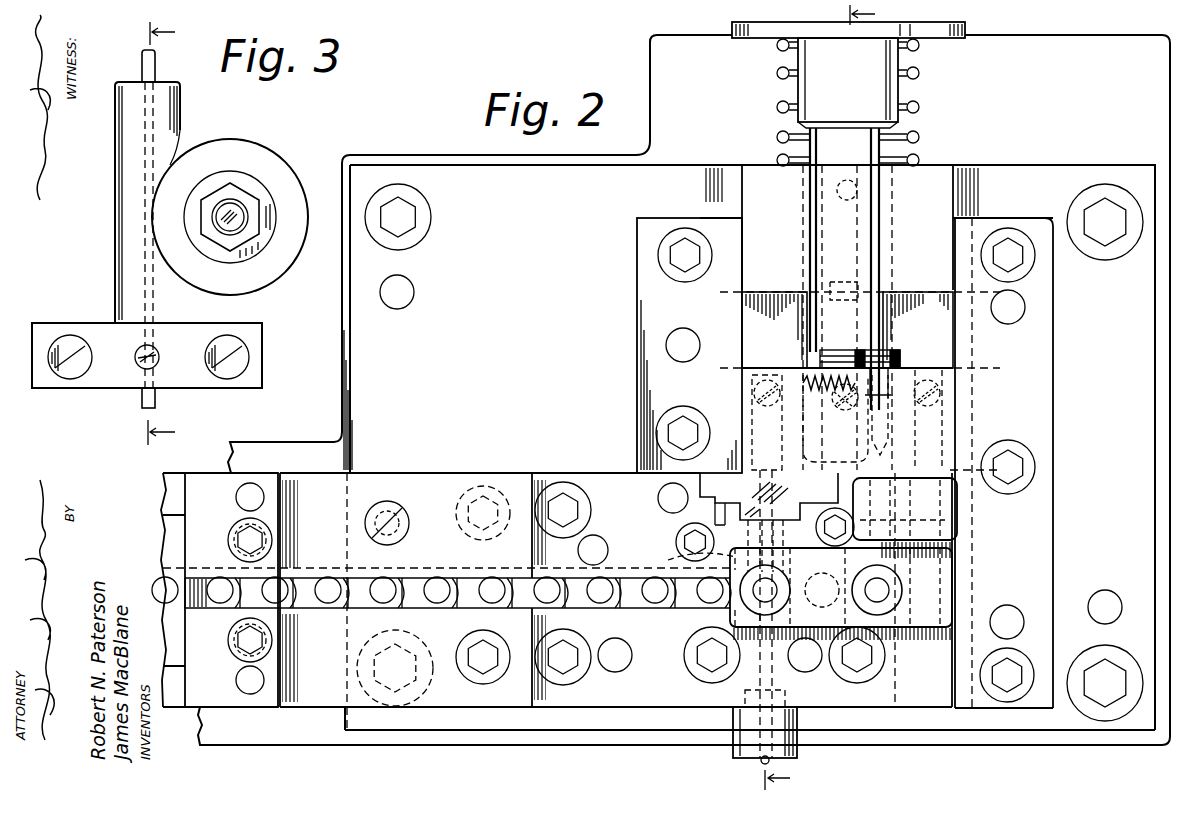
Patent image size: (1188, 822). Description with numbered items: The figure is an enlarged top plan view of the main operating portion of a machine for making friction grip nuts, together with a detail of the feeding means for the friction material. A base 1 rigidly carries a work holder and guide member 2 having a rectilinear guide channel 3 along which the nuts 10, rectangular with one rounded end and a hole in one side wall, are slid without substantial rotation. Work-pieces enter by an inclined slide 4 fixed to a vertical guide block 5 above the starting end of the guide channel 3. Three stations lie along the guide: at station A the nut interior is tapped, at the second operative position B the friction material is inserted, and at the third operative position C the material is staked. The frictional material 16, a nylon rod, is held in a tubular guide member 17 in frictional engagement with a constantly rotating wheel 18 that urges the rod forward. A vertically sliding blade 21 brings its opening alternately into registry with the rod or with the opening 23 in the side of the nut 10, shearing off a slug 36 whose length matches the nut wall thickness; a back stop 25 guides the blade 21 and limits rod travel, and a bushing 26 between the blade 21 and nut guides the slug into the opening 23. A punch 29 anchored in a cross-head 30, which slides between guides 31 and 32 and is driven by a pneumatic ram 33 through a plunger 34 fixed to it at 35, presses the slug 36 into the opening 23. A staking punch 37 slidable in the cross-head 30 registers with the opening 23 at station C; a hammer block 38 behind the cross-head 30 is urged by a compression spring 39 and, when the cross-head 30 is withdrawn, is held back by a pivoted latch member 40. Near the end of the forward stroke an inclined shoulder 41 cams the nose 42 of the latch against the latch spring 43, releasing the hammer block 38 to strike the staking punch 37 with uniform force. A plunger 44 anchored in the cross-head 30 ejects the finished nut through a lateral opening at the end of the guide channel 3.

In FIG. 2, the base 1 is at (1055, 733).
In FIG. 2, the work holder and guide member 2 is at (612, 707).
In FIG. 2, the guide channel 3 is at (441, 610).
In FIG. 3, the inclined slide 4 is at (150, 233).
In FIG. 2, the inclined slide 4 is at (148, 492).
In FIG. 2, the vertical guide block 5 is at (208, 492).
In FIG. 2, the nuts 10 is at (313, 605).
In FIG. 3, the frictional material 16 is at (155, 65).
In FIG. 2, the frictional material 16 is at (760, 761).
In FIG. 3, the tubular guide member 17 is at (172, 112).
In FIG. 2, the tubular guide member 17 is at (797, 722).
In FIG. 3, the wheel 18 is at (208, 160).
In FIG. 2, the blade 21 is at (785, 512).
In FIG. 2, the opening 23 is at (868, 574).
In FIG. 2, the back stop 25 is at (745, 490).
In FIG. 2, the bushing 26 is at (676, 550).
In FIG. 2, the punch 29 is at (765, 435).
In FIG. 2, the cross-head 30 is at (750, 392).
In FIG. 2, the guide 31 is at (1040, 348).
In FIG. 2, the guide 32 is at (640, 285).
In FIG. 2, the pneumatic ram 33 is at (937, 40).
In FIG. 2, the plunger 34 is at (830, 150).
In FIG. 2, the fixing point 35 is at (843, 411).
In FIG. 2, the slug 36 is at (805, 576).
In FIG. 2, the staking punch 37 is at (898, 352).
In FIG. 2, the hammer block 38 is at (930, 283).
In FIG. 2, the compression spring 39 is at (777, 106).
In FIG. 2, the latch member 40 is at (830, 350).
In FIG. 2, the inclined shoulder 41 is at (884, 392).
In FIG. 2, the nose 42 is at (858, 350).
In FIG. 2, the latch spring 43 is at (797, 378).
In FIG. 2, the plunger 44 is at (925, 440).
In FIG. 2, the first operative station A is at (608, 598).
In FIG. 2, the second operative position B is at (755, 595).
In FIG. 2, the third operative position C is at (880, 592).